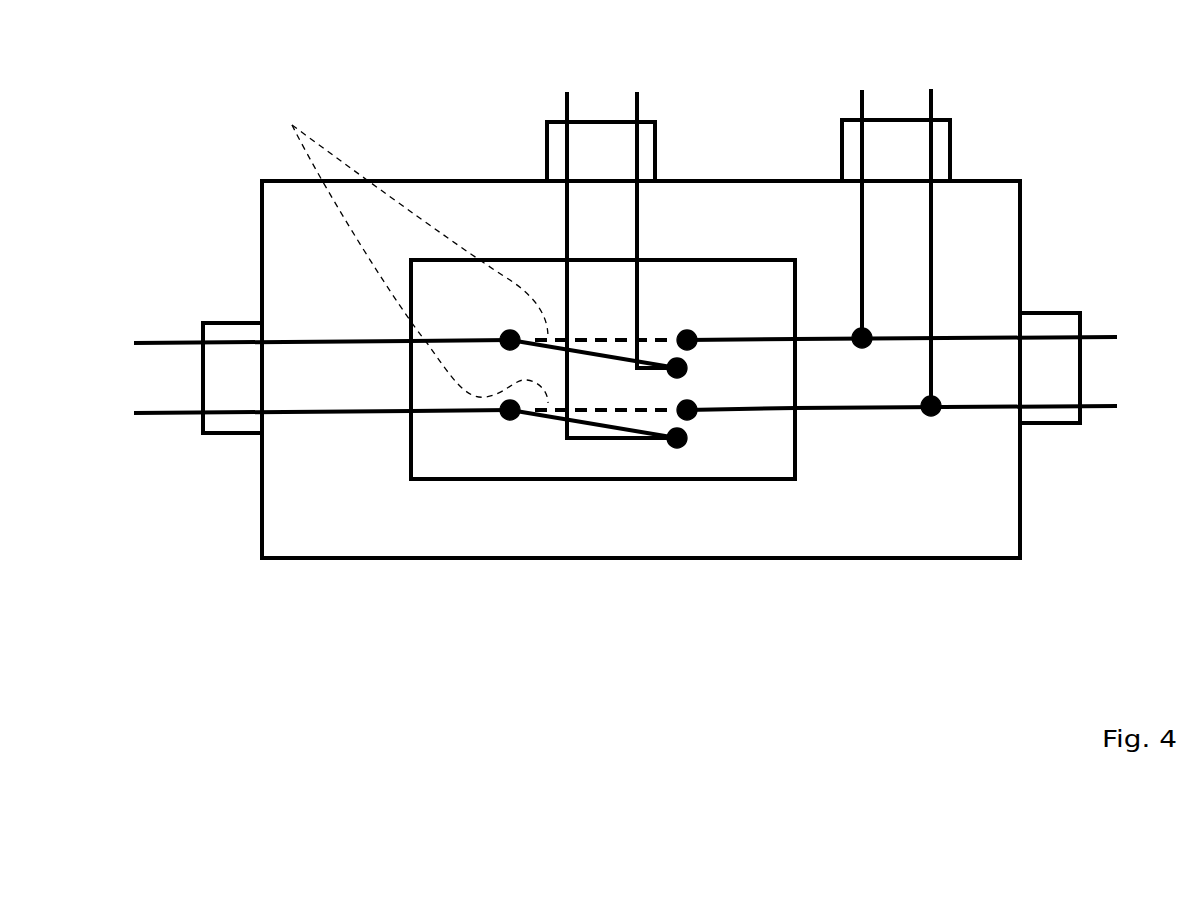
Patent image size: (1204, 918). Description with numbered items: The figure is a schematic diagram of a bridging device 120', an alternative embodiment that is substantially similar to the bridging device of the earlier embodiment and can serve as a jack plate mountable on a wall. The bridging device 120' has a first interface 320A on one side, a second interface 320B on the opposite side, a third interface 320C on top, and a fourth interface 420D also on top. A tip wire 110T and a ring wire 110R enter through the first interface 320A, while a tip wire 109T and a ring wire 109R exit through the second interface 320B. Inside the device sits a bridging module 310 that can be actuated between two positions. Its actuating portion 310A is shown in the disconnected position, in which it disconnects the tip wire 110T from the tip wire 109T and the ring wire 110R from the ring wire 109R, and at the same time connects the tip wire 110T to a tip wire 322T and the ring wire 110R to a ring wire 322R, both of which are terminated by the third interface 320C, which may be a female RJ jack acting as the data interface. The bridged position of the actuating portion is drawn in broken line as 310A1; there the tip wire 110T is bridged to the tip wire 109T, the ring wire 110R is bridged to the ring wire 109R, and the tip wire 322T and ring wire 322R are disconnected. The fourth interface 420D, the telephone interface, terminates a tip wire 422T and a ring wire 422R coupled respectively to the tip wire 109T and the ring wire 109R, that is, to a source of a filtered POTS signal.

The bridging device 120' is at (641, 389).
The bridging module 310 is at (777, 478).
The actuating portion 310A is at (593, 350).
The actuating portion in bridged position 310A1 is at (406, 247).
The tip wire 110T is at (163, 342).
The ring wire 110R is at (167, 413).
The tip wire 109T is at (1100, 335).
The ring wire 109R is at (1105, 410).
The first interface 320A is at (227, 435).
The second interface 320B is at (1047, 427).
The third interface 320C is at (545, 155).
The fourth interface 420D is at (952, 147).
The ring wire 322R is at (565, 113).
The tip wire 322T is at (638, 112).
The tip wire 422T is at (858, 103).
The ring wire 422R is at (932, 105).